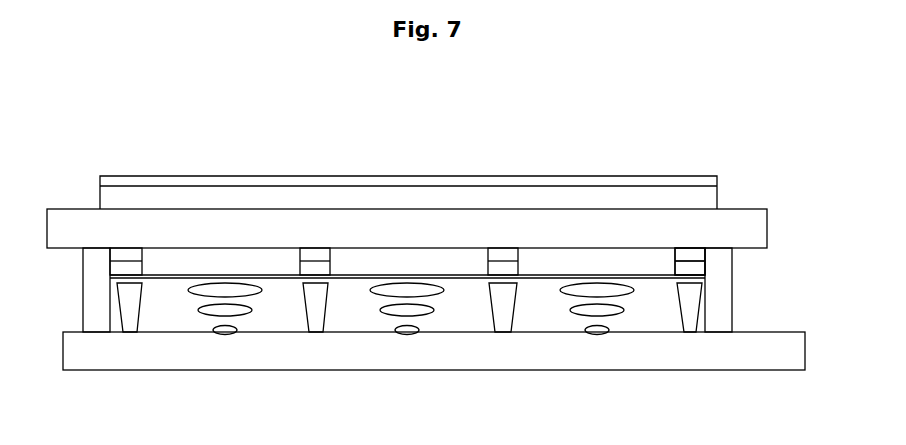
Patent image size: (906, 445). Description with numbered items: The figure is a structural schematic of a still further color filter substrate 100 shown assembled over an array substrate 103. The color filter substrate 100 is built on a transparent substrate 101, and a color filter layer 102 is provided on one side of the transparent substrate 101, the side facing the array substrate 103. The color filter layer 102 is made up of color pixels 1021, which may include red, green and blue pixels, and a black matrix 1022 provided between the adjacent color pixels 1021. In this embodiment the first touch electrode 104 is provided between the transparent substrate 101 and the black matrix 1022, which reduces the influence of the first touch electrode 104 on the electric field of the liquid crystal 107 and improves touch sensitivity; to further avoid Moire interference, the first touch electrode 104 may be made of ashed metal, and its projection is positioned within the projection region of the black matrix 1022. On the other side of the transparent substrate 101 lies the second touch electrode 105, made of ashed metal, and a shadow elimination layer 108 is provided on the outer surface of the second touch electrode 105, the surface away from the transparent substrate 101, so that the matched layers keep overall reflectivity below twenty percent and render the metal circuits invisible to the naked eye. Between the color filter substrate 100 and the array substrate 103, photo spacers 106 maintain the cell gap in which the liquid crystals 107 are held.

The color filter substrate 100 is at (317, 90).
The transparent substrate 101 is at (620, 228).
The color filter layer 102 is at (375, 138).
The color pixels 1021 is at (558, 257).
The black matrix 1022 is at (128, 268).
The array substrate 103 is at (362, 358).
The first touch electrode 104 is at (689, 250).
The second touch electrode 105 is at (642, 193).
The photo spacer 106 is at (132, 308).
The liquid crystals 107 is at (252, 293).
The shadow elimination layer 108 is at (713, 176).